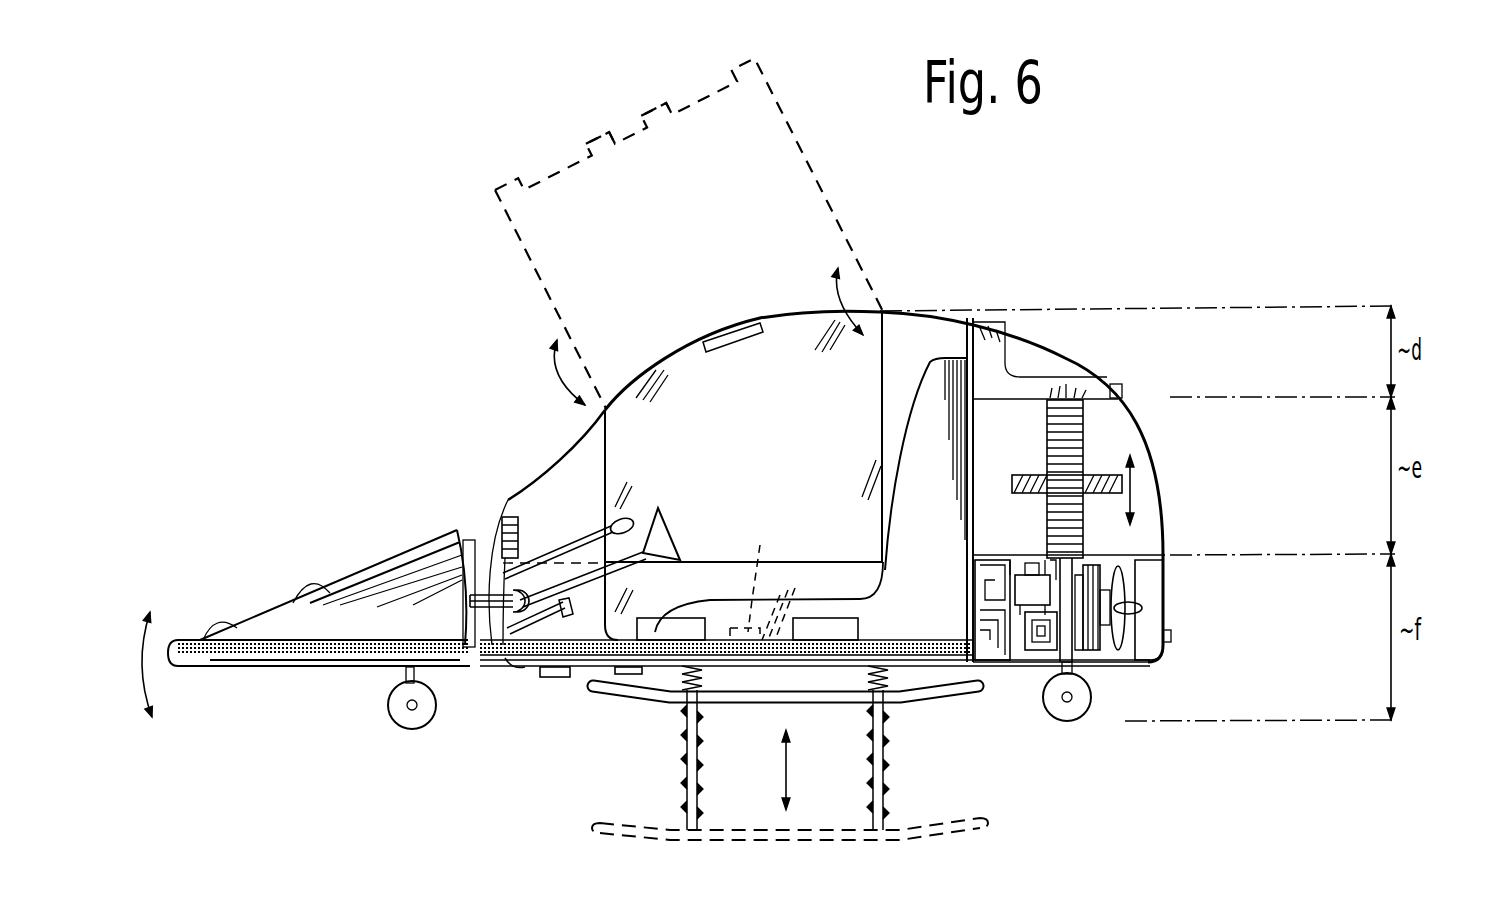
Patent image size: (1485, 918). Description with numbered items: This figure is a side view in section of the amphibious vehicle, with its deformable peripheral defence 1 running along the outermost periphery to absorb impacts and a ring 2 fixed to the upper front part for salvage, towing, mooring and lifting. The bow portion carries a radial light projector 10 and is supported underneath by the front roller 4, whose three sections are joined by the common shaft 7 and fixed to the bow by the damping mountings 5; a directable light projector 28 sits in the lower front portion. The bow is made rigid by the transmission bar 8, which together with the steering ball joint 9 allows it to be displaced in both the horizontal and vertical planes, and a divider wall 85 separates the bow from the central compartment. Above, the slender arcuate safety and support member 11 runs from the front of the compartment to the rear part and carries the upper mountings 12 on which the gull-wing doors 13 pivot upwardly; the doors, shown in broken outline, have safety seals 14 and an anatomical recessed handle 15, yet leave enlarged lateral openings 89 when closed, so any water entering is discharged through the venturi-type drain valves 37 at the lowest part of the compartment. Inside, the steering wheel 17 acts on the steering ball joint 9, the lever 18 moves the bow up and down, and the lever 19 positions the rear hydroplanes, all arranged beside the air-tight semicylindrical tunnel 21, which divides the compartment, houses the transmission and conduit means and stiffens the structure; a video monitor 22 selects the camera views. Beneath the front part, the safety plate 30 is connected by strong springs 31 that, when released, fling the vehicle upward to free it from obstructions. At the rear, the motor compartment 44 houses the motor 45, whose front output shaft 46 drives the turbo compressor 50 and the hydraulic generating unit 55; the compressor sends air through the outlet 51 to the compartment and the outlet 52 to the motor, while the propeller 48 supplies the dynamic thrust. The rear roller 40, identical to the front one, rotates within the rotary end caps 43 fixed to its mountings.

The peripheral defence 1 is at (214, 665).
The ring 2 is at (222, 625).
The front roller 4 is at (425, 722).
The mountings 5 is at (400, 678).
The shaft of the roller 7 is at (405, 707).
The transmission bar 8 is at (510, 614).
The steering ball joint 9 is at (487, 594).
The radial light projector 10 is at (320, 592).
The arcuate safety and support member 11 is at (910, 312).
The mounting for the doors 12 is at (743, 334).
The upwardly opening doors 13 is at (786, 128).
The safety seals 14 is at (766, 560).
The anatomical handle 15 is at (624, 126).
The steering wheel 17 is at (665, 525).
The lever for moving the bow portion 18 is at (597, 536).
The lever for positioning the rear hydroplanes 19 is at (522, 658).
The air-tight semicylindrical tunnel 21 is at (838, 560).
The video monitor 22 is at (506, 516).
The directable radial light projector 28 is at (555, 678).
The safety plate 30 is at (665, 698).
The springs 31 is at (700, 695).
The drain valves 37 is at (630, 674).
The rear roller 40 is at (1062, 715).
The rotary end caps 43 is at (1070, 700).
The motor compartment 44 is at (1140, 590).
The motor 45 is at (1095, 650).
The front output shaft of the motor 46 is at (1012, 662).
The propeller 48 is at (1122, 640).
The turbo compressor 50 is at (1015, 585).
The air outlet of the turbo compressor to the compartment 51 is at (1035, 570).
The air outlet from the turbo compressor to the motor 52 is at (1080, 556).
The hydraulic generating unit 55 is at (1040, 650).
The divider wall 85 is at (977, 342).
The enlarged openings 89 is at (693, 107).